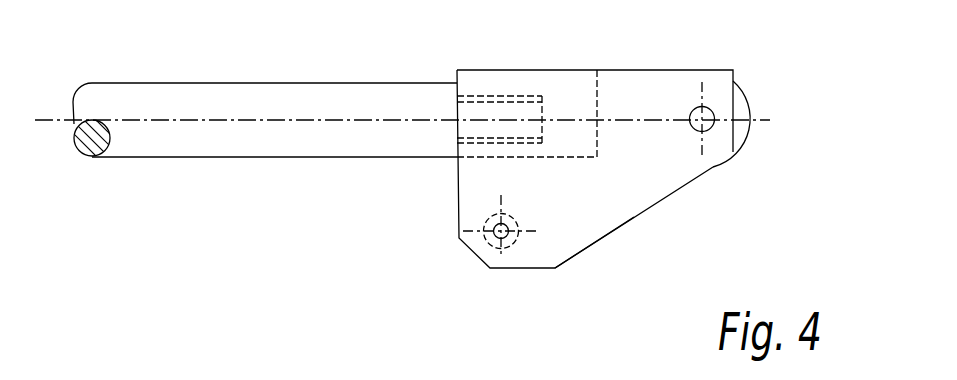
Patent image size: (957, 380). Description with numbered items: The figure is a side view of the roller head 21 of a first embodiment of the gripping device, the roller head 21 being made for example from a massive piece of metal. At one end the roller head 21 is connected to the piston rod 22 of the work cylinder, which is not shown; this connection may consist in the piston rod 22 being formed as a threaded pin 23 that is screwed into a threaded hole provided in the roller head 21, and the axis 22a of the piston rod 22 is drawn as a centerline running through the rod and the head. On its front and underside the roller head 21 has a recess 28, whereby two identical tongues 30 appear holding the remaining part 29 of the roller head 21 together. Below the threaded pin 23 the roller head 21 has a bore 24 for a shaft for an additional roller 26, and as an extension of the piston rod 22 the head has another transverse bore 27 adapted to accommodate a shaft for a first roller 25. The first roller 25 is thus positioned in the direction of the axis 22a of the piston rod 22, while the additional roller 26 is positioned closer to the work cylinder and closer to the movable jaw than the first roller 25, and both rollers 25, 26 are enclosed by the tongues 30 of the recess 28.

The roller head 21 is at (436, 200).
The piston rod 22 is at (157, 138).
The axis of the piston rod 22a is at (266, 121).
The threaded pin 23 is at (518, 127).
The bore 24 is at (508, 234).
The first roller 25 is at (747, 88).
The additional roller 26 is at (486, 241).
The transverse bore 27 is at (713, 113).
The recess 28 is at (678, 149).
The remaining part 29 is at (579, 100).
The tongues 30 is at (555, 212).